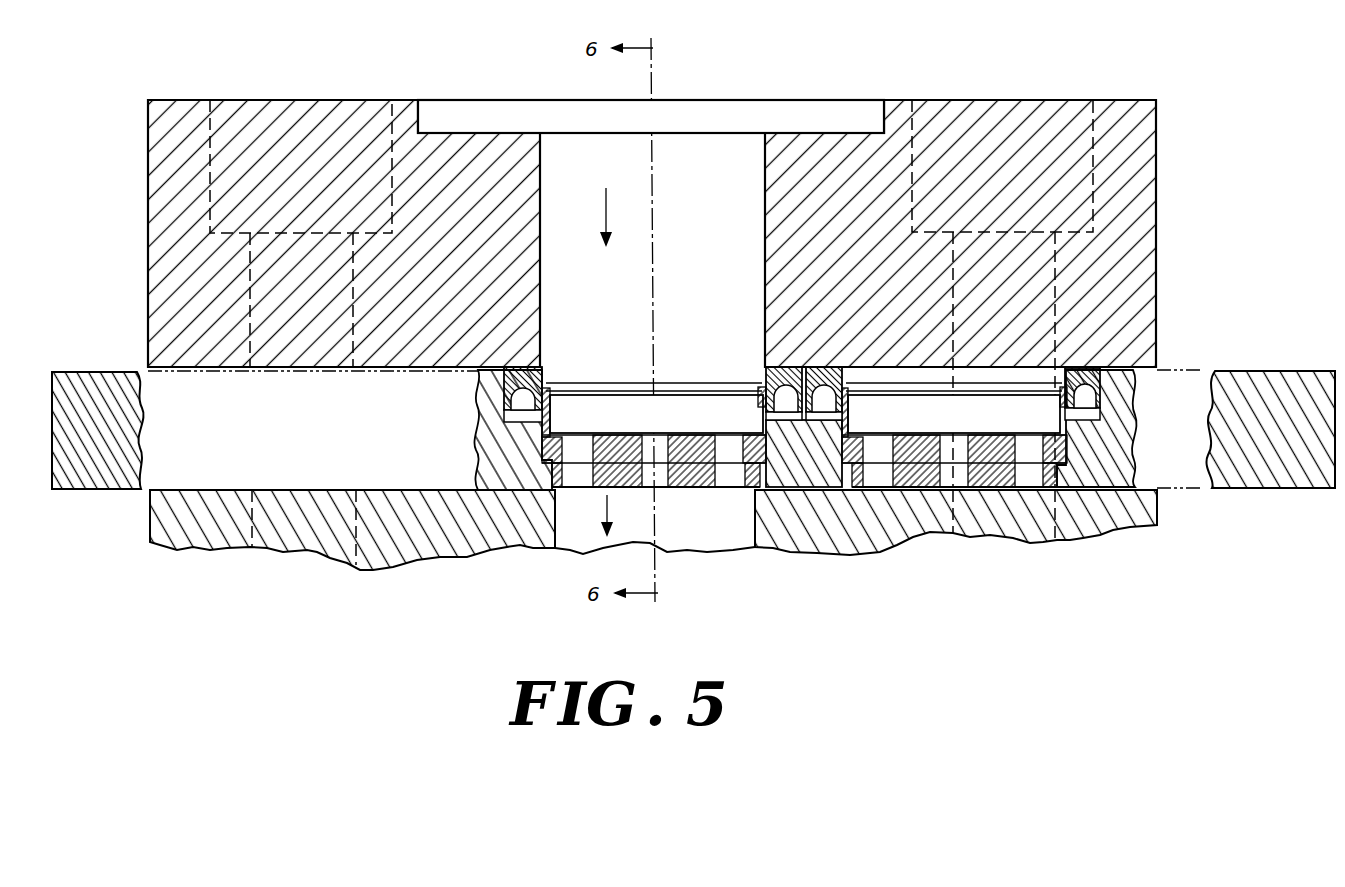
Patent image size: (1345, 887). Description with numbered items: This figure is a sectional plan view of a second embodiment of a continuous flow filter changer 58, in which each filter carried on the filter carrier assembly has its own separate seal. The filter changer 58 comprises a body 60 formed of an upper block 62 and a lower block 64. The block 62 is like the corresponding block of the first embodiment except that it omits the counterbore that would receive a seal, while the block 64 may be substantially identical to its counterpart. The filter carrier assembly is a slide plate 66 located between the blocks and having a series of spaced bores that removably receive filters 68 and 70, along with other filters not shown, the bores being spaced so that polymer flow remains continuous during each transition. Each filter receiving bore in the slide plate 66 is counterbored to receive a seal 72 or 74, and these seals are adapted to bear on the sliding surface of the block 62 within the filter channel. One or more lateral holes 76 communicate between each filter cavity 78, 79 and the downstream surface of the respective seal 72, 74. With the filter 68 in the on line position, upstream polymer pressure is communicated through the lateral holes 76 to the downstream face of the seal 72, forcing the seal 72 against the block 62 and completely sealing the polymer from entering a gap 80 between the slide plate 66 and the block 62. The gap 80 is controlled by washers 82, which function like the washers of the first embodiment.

The continuous flow filter changer 58 is at (984, 62).
The body 60 is at (1130, 100).
The block 62 is at (1158, 296).
The block 64 is at (1158, 508).
The slide plate 66 is at (1235, 372).
The filter 68 is at (757, 395).
The filter 70 is at (1066, 392).
The seal 72 is at (765, 372).
The seal 74 is at (860, 377).
The lateral holes 76 is at (548, 418).
The filter cavity 78 is at (637, 428).
The filter cavity 79 is at (995, 424).
The gap 80 is at (1160, 365).
The washers 82 is at (245, 367).